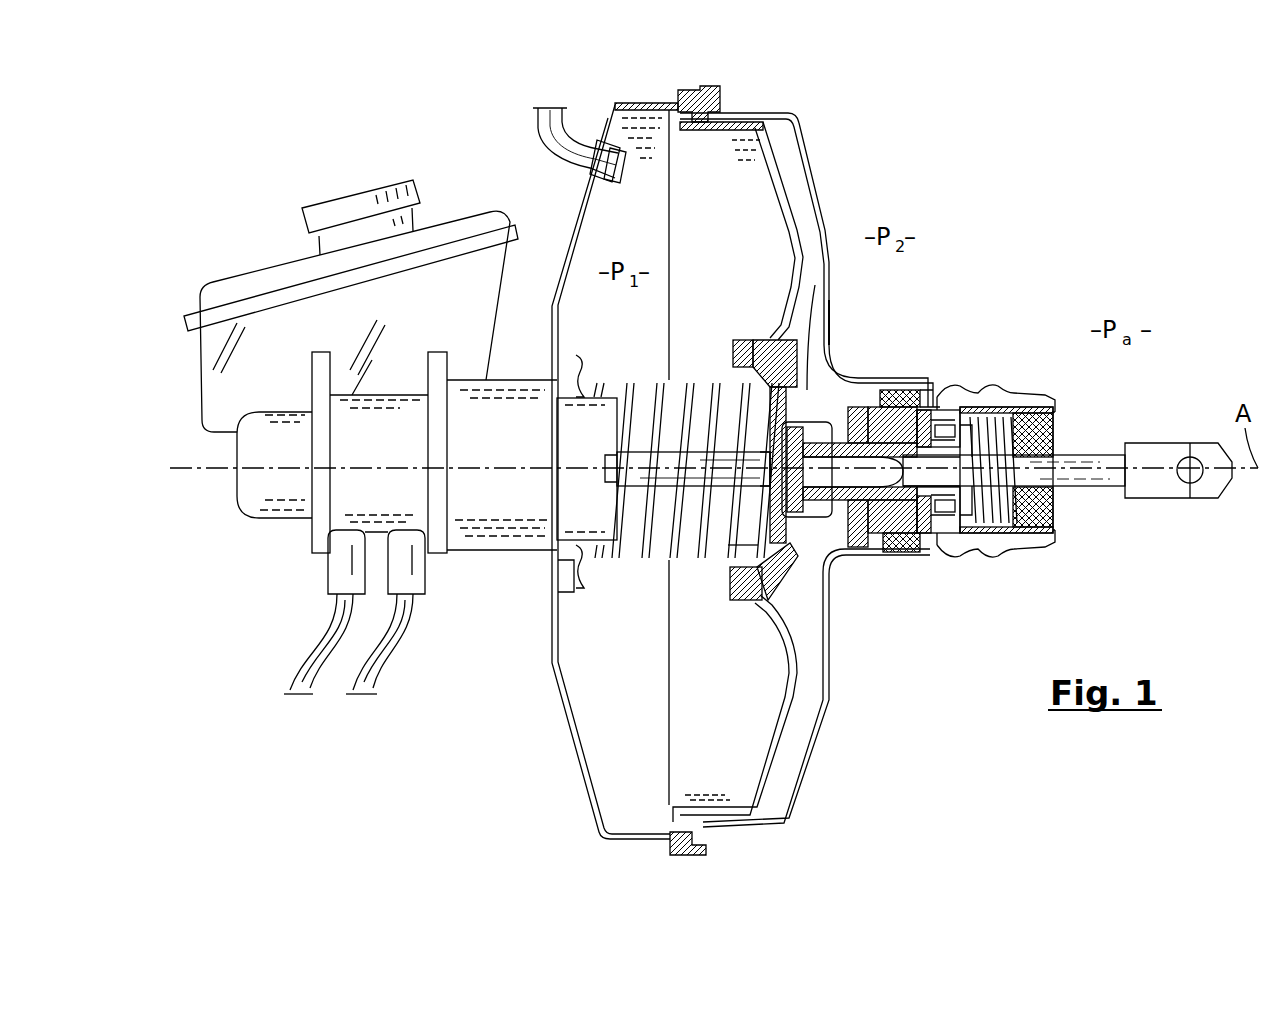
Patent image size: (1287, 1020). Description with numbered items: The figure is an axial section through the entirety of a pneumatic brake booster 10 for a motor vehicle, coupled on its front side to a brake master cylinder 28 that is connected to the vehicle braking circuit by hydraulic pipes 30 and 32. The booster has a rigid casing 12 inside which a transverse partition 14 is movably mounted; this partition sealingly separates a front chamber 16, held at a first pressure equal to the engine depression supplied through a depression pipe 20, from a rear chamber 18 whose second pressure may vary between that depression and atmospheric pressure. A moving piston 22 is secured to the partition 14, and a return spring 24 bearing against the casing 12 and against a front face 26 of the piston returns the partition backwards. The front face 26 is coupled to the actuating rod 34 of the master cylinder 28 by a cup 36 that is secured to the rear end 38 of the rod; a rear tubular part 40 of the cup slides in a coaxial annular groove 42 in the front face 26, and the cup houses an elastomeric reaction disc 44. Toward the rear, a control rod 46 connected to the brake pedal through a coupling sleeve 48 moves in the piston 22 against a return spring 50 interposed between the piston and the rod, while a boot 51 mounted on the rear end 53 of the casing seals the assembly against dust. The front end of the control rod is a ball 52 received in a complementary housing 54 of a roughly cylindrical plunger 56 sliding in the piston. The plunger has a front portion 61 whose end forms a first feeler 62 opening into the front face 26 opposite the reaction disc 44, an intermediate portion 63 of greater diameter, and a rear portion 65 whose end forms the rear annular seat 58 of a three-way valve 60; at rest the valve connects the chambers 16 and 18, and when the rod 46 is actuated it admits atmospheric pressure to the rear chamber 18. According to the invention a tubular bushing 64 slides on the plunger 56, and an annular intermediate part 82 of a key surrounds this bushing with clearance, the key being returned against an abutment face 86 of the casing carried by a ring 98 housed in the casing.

The pneumatic brake booster 10 is at (913, 278).
The rigid casing 12 is at (823, 200).
The transverse partition 14 is at (778, 170).
The front chamber 16 is at (612, 238).
The rear chamber 18 is at (838, 230).
The depression pipe 20 is at (538, 130).
The moving piston 22 is at (834, 283).
The return spring 24 is at (643, 557).
The front face 26 is at (727, 370).
The brake master cylinder 28 is at (472, 528).
The hydraulic pipe 30 is at (300, 680).
The hydraulic pipe 32 is at (373, 683).
The actuating rod 34 is at (670, 455).
The cup 36 is at (730, 545).
The rear end 38 is at (757, 465).
The rear tubular part 40 is at (773, 605).
The coaxial annular groove 42 is at (825, 607).
The reaction disc 44 is at (773, 478).
The control rod 46 is at (1098, 455).
The coupling sleeve 48 is at (1167, 453).
The return spring 50 is at (990, 403).
The boot 51 is at (1015, 383).
The ball 52 is at (923, 563).
The rear end 53 is at (917, 393).
The complementary housing 54 is at (950, 408).
The plunger 56 is at (890, 557).
The rear annular seat 58 is at (930, 557).
The three-way valve 60 is at (953, 548).
The front portion 61 is at (770, 480).
The first feeler 62 is at (842, 383).
The intermediate portion 63 is at (913, 562).
The tubular bushing 64 is at (838, 437).
The rear portion 65 is at (908, 389).
The annular intermediate part 82 is at (848, 548).
The abutment face 86 is at (868, 556).
The ring 98 is at (885, 389).